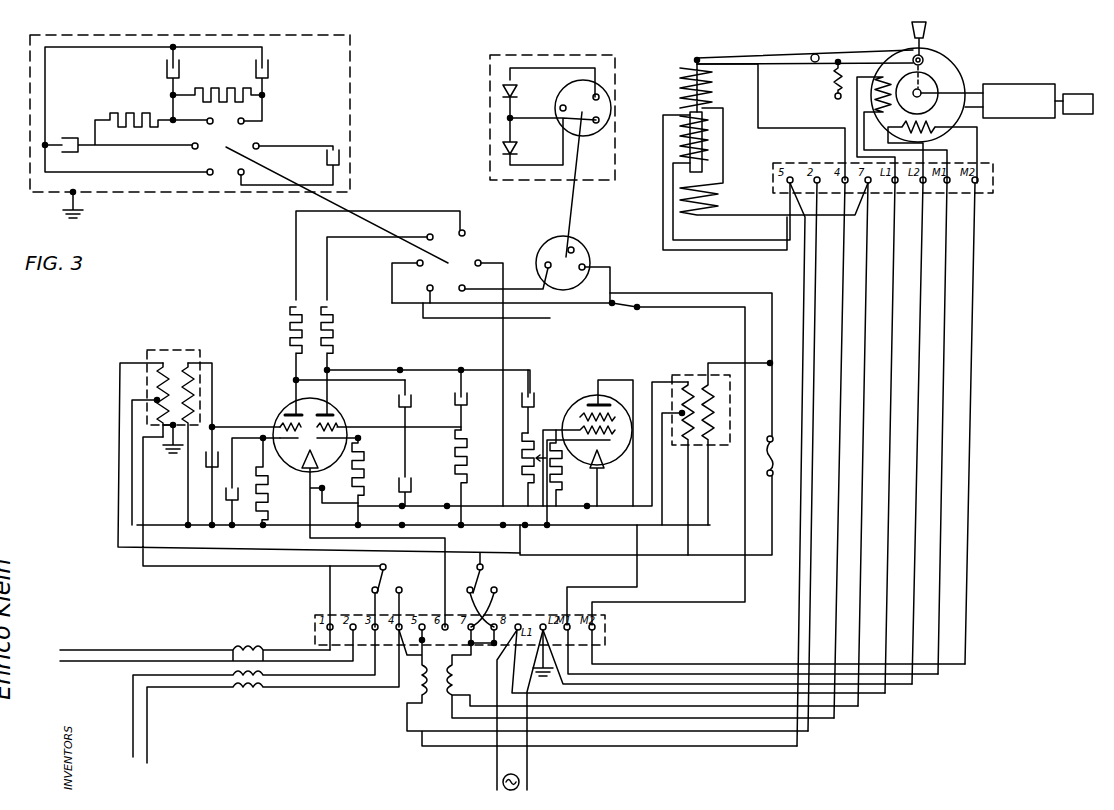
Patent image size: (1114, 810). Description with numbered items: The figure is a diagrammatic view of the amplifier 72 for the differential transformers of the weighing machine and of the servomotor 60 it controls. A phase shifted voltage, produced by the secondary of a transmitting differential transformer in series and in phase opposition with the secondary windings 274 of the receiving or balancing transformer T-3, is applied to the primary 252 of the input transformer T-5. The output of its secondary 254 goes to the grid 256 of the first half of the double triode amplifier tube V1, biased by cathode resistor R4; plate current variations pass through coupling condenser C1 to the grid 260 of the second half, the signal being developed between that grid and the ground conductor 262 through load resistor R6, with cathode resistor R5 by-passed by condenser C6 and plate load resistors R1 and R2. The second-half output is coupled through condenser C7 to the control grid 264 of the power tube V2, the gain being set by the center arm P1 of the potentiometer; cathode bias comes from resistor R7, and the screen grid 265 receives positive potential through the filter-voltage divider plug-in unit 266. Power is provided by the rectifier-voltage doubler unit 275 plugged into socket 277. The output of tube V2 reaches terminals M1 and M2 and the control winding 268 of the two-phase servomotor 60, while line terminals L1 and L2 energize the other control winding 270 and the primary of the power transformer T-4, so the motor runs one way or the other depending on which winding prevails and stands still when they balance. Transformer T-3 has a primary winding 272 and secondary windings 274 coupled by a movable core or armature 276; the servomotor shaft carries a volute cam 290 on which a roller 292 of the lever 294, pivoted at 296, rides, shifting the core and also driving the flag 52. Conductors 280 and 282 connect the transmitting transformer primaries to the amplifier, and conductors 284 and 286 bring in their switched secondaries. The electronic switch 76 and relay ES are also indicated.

The filter-voltage divider plug-in unit 266 is at (190, 126).
The amplifier 72 is at (230, 262).
The rectifier-voltage doubler unit 275 is at (490, 128).
The socket 277 is at (535, 250).
The lever 294 is at (785, 58).
The pivot 296 is at (815, 54).
The roller 292 is at (913, 57).
The flag 52 is at (928, 30).
The cam 290 is at (933, 78).
The servomotor 60 is at (950, 78).
The electronic switch 76 is at (1022, 84).
The relay ES is at (1075, 114).
The control winding 270 is at (872, 97).
The control winding 268 is at (930, 132).
The secondary windings 274 is at (705, 92).
The primary winding 272 is at (708, 140).
The core or armature 276 is at (712, 170).
The receiving or balancing transformer T-3 is at (754, 155).
The power transformer T-4 is at (716, 445).
The input transformer T-5 is at (164, 425).
The primary 252 is at (150, 392).
The secondary 254 is at (197, 382).
The grid 256 is at (284, 425).
The grid 260 is at (340, 421).
The double triode amplifier tube V1 is at (289, 398).
The power tube V2 is at (598, 404).
The screen grid 265 is at (580, 425).
The control grid 264 is at (612, 452).
The ground conductor 262 is at (393, 560).
The conductor 280 is at (106, 650).
The conductor 282 is at (83, 664).
The conductor 284 is at (133, 718).
The conductor 286 is at (155, 697).
The plate load resistor R1 is at (276, 361).
The plate load resistor R2 is at (345, 361).
The cathode resistor R4 is at (265, 482).
The cathode resistor R5 is at (372, 481).
The load resistor R6 is at (471, 477).
The cathode resistor R7 is at (568, 468).
The center arm P1 is at (529, 469).
The coupling condenser C1 is at (470, 400).
The condenser C6 is at (416, 443).
The coupling condenser C7 is at (525, 398).
The line terminal L1 is at (690, 650).
The line terminal L2 is at (655, 655).
The terminal M1 is at (940, 610).
The terminal M2 is at (968, 553).